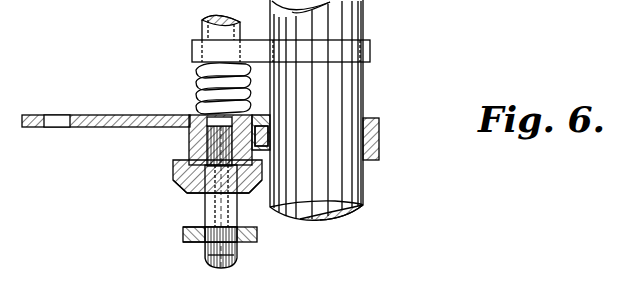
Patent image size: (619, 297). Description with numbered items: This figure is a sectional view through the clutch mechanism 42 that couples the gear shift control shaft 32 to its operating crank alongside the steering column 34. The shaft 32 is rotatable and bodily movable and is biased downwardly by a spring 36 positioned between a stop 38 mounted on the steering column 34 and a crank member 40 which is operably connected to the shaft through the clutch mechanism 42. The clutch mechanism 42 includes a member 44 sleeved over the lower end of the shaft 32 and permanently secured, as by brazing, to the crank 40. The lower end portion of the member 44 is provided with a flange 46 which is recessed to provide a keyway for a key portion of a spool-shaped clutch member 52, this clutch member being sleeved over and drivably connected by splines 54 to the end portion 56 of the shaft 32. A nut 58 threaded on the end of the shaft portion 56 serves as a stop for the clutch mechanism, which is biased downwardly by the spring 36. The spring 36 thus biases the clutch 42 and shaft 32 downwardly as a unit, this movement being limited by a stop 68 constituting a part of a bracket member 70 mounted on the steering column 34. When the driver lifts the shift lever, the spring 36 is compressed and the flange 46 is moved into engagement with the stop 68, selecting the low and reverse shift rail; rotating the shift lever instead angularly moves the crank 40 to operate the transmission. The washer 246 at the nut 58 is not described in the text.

The shaft 32 is at (200, 24).
The steering column 34 is at (364, 190).
The spring 36 is at (195, 78).
The stop 38 is at (340, 46).
The crank member 40 is at (90, 114).
The clutch mechanism 42 is at (183, 177).
The member 44 is at (190, 144).
The flange 46 is at (178, 166).
The clutch member 52 is at (195, 192).
The splines 54 is at (205, 120).
The end portion of the shaft 56 is at (246, 242).
The nut 58 is at (210, 262).
The stop 68 is at (240, 185).
The bracket member 70 is at (380, 124).
The lock washer 246 is at (192, 242).